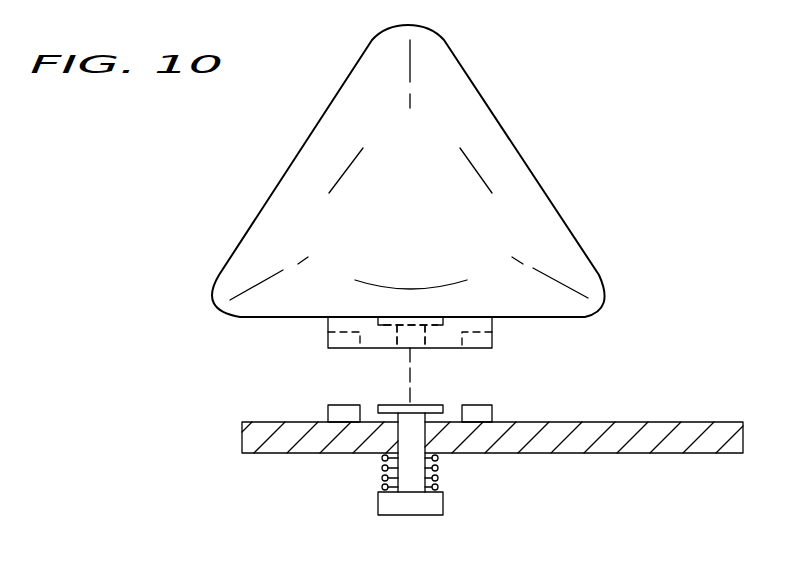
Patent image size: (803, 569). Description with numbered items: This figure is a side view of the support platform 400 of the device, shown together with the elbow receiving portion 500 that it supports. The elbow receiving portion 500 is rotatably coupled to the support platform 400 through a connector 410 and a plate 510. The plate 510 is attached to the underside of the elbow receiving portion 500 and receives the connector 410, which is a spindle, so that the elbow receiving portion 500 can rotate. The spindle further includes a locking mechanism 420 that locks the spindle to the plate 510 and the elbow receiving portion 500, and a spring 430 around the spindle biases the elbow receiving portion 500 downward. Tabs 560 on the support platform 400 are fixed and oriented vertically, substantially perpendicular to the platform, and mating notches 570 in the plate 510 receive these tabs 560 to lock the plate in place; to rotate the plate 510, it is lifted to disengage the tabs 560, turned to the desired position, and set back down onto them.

The elbow receiving portion 500 is at (513, 140).
The plate 510 is at (338, 322).
The mating notches 570 is at (493, 340).
The locking mechanism 420 is at (397, 405).
The tabs 560 is at (483, 413).
The support platform 400 is at (242, 440).
The spring 430 is at (438, 468).
The connector 410 is at (410, 468).